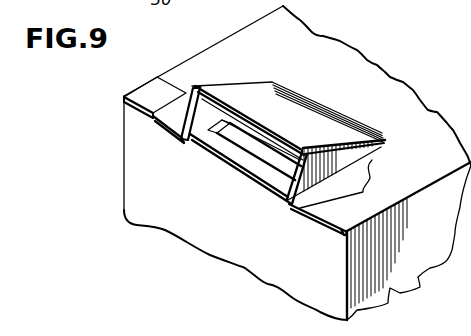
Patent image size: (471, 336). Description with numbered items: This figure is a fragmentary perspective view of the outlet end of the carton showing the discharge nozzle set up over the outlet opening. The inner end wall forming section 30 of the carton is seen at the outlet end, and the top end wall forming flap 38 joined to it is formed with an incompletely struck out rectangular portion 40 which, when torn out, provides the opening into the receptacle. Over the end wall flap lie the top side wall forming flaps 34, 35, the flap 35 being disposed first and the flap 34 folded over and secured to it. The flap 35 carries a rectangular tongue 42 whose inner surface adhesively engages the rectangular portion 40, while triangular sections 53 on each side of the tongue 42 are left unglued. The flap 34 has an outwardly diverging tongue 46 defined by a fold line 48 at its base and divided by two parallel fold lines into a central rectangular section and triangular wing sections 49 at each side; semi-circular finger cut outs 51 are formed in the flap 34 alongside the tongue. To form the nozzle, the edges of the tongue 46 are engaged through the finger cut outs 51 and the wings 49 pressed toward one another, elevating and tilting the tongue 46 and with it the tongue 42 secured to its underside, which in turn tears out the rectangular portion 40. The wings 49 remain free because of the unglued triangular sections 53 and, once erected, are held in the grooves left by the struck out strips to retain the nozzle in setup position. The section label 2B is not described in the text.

The inner end wall forming section 30 is at (230, 243).
The top side wall forming flap 34 is at (382, 77).
The section face 2B is at (390, 284).
The top side wall forming flap 35 is at (138, 108).
The triangular sections 53 is at (164, 120).
The triangular wing sections 49 is at (183, 105).
The semi-circular finger cut outs 51 is at (188, 97).
The outwardly diverging tongue 46 is at (258, 87).
The fold line 48 is at (327, 104).
The top end wall forming flap 38 is at (207, 118).
The rectangular tongue 42 is at (227, 147).
The incompletely struck out rectangular portion 40 is at (264, 141).